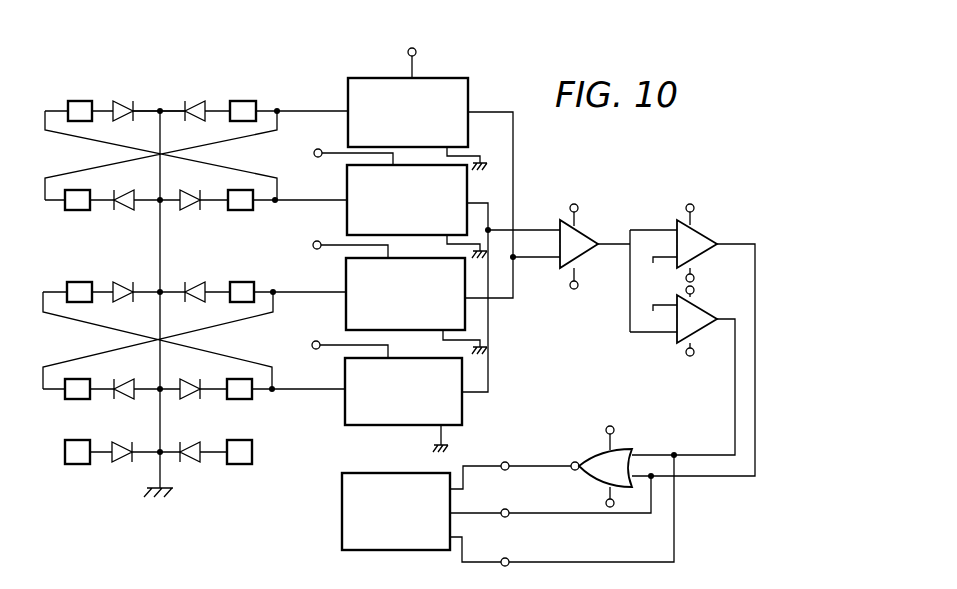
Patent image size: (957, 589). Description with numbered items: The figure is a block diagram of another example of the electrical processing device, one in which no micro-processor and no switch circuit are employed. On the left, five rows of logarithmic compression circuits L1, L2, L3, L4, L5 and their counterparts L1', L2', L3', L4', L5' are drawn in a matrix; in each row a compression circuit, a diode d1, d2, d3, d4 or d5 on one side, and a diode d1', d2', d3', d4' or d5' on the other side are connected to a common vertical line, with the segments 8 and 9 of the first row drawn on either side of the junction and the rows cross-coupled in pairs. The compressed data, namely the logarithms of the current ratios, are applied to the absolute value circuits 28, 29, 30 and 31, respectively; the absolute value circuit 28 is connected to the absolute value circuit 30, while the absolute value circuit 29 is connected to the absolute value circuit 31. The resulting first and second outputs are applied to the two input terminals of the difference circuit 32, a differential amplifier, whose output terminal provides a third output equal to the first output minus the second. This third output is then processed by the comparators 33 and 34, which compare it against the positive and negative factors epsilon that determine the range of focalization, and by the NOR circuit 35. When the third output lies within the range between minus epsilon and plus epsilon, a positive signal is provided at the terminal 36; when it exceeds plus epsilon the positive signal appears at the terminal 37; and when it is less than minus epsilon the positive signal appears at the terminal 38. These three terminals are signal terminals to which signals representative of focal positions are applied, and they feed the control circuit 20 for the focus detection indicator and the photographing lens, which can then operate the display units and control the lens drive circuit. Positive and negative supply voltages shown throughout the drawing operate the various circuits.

The logarithmic compression circuit L1 is at (80, 91).
The logarithmic compression circuit L2 is at (68, 177).
The logarithmic compression circuit L3 is at (79, 272).
The logarithmic compression circuit L4 is at (71, 365).
The logarithmic compression circuit L5 is at (77, 437).
The logarithmic compression circuit L1' is at (248, 94).
The logarithmic compression circuit L2' is at (240, 176).
The logarithmic compression circuit L3' is at (244, 273).
The logarithmic compression circuit L4' is at (244, 365).
The logarithmic compression circuit L5' is at (243, 437).
The diode d1 is at (123, 89).
The diode d2 is at (132, 187).
The diode d3 is at (124, 276).
The diode d4 is at (128, 375).
The diode d5 is at (122, 436).
The diode d1' is at (199, 94).
The diode d2' is at (183, 186).
The diode d3' is at (195, 277).
The diode d4' is at (182, 375).
The diode d5' is at (189, 436).
The line 8 is at (150, 120).
The line 9 is at (177, 120).
The control circuit 20 is at (342, 490).
The absolute value circuit 28 is at (468, 80).
The absolute value circuit 29 is at (467, 183).
The absolute value circuit 30 is at (465, 315).
The absolute value circuit 31 is at (462, 400).
The difference circuit 32 is at (582, 233).
The comparator 33 is at (700, 232).
The comparator 34 is at (676, 338).
The NOR circuit 35 is at (614, 430).
The signal terminal 36 is at (502, 469).
The signal terminal 37 is at (502, 516).
The signal terminal 38 is at (500, 566).